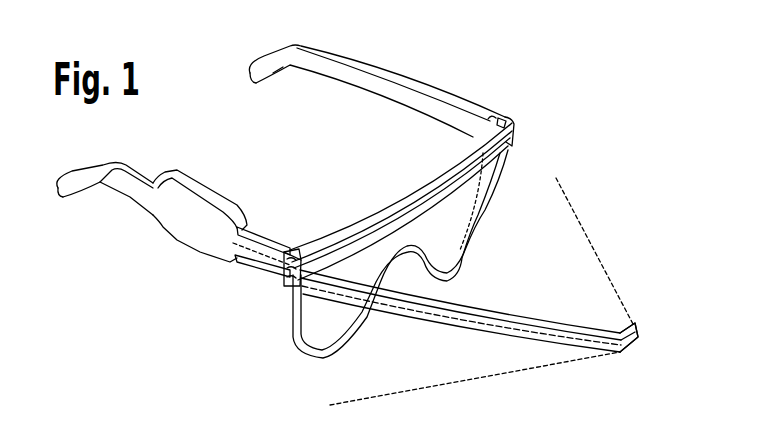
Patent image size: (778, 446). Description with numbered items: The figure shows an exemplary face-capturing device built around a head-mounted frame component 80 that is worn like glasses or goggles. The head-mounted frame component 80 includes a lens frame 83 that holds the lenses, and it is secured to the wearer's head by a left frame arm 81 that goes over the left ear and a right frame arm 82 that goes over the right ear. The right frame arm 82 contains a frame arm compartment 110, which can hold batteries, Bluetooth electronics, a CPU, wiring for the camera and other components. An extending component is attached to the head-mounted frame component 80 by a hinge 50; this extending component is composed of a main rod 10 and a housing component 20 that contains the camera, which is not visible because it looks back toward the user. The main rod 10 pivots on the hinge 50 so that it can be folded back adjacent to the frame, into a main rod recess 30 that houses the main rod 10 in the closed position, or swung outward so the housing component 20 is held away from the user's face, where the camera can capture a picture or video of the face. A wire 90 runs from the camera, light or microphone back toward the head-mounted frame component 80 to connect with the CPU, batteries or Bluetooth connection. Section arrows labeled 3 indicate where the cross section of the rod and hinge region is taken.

The main rod 10 is at (453, 330).
The housing component 20 is at (640, 339).
The main rod recess 30 is at (513, 145).
The hinge 50 is at (288, 283).
The head-mounted frame component 80 is at (514, 122).
The left frame arm 81 is at (413, 80).
The right frame arm 82 is at (130, 195).
The lens frame 83 is at (447, 208).
The wire 90 is at (517, 339).
The frame arm compartment 110 is at (178, 231).
The section line 3 is at (255, 289).